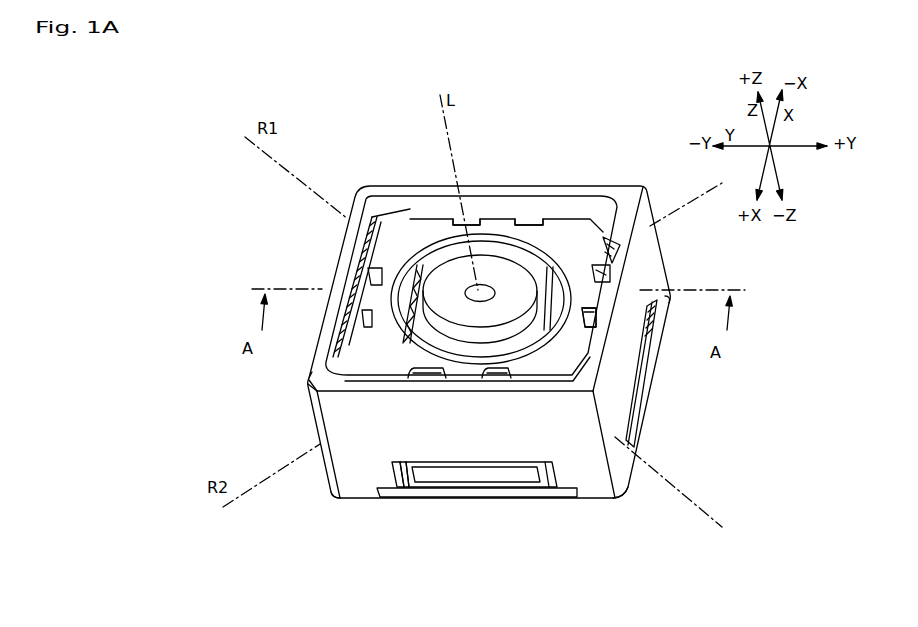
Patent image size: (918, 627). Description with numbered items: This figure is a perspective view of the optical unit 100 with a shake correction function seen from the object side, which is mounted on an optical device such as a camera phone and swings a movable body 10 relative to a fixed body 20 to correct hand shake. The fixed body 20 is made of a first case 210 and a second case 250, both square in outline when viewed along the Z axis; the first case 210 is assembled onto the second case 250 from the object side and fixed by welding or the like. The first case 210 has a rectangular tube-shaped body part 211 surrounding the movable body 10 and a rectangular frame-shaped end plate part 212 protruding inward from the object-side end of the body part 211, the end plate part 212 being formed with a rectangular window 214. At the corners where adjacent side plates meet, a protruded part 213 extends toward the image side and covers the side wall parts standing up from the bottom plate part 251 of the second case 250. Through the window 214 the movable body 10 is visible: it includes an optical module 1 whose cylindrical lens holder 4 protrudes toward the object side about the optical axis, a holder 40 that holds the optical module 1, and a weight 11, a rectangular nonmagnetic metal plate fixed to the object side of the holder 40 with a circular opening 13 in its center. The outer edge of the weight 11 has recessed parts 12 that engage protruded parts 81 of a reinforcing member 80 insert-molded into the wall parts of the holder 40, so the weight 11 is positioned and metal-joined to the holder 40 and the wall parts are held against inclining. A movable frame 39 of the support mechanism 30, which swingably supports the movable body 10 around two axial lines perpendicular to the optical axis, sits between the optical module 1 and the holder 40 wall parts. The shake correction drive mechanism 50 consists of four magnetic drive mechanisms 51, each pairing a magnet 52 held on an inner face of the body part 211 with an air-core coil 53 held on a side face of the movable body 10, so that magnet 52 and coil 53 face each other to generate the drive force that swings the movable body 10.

The optical unit 100 is at (252, 222).
The fixed body 20 is at (470, 398).
The first case 210 is at (305, 497).
The body part 211 is at (318, 423).
The end plate part 212 is at (318, 372).
The protruded part 213 is at (352, 487).
The rectangular window 214 is at (335, 347).
The second case 250 is at (406, 518).
The bottom plate part 251 is at (491, 497).
The movable body 10 is at (526, 326).
The weight 11 is at (412, 218).
The holder 40 is at (393, 212).
The optical module 1 is at (435, 257).
The lens holder 4 is at (562, 262).
The circular opening 13 is at (521, 293).
The movable frame 39 is at (347, 279).
The support mechanism 30 is at (403, 283).
The magnet 52 is at (470, 220).
The coil 53 is at (598, 344).
The magnetic drive mechanism 51 is at (681, 361).
The shake correction drive mechanism 50 is at (589, 317).
The recessed part 12 is at (522, 220).
The protruded part 81 is at (579, 349).
The reinforcing member 80 is at (487, 377).